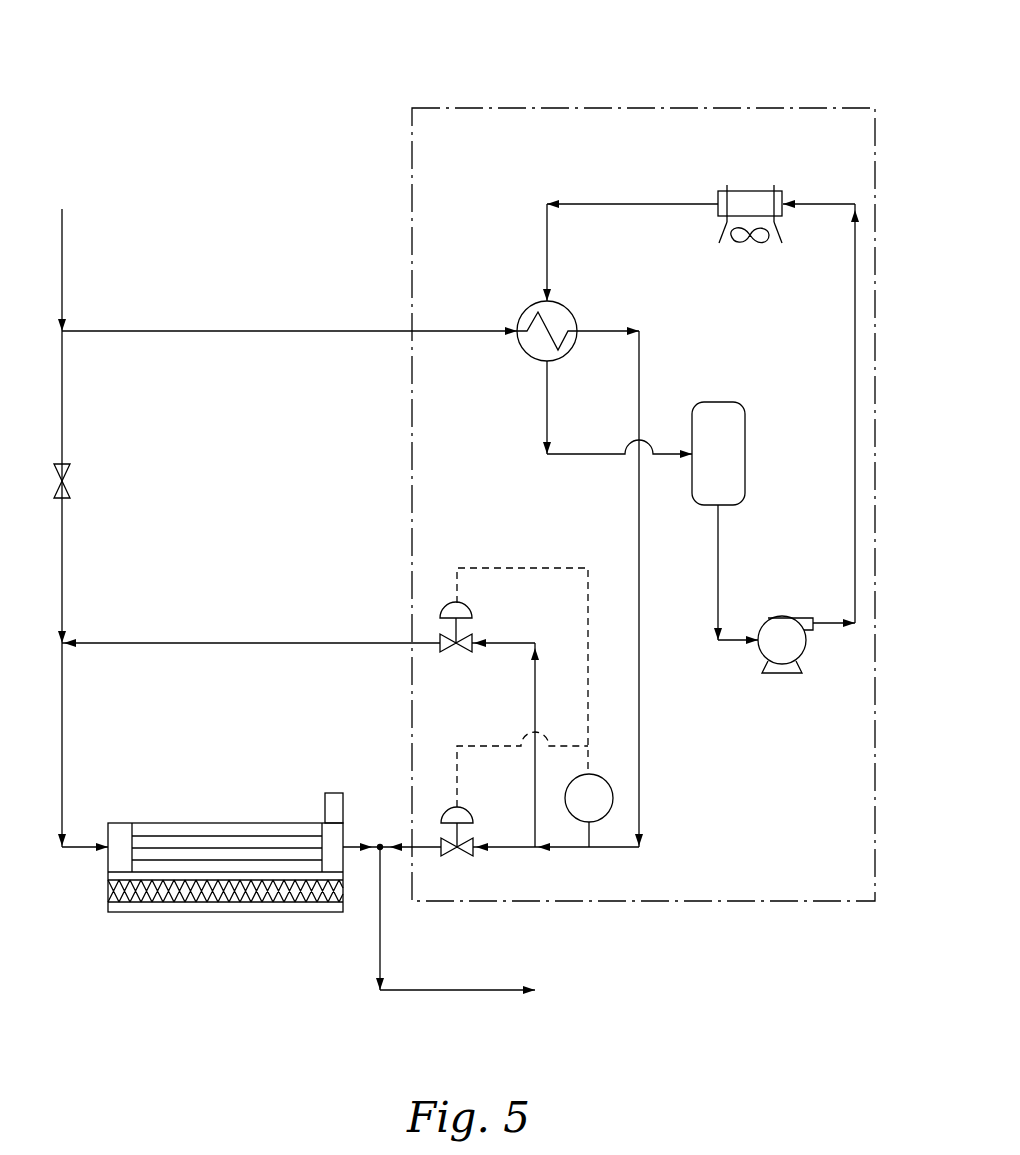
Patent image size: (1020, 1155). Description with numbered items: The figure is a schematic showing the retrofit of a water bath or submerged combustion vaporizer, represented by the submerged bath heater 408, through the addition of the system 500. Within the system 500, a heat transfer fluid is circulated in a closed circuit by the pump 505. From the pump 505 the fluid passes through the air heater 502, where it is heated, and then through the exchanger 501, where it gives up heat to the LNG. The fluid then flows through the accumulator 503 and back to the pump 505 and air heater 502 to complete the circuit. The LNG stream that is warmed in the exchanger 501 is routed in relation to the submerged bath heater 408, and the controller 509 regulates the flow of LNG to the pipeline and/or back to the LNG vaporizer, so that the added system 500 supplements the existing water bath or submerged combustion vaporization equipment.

The system 500 is at (656, 78).
The exchanger 501 is at (529, 360).
The air heater 502 is at (744, 191).
The accumulator 503 is at (745, 432).
The pump 505 is at (787, 617).
The controller 509 is at (487, 566).
The submerged bath heater 408 is at (223, 823).